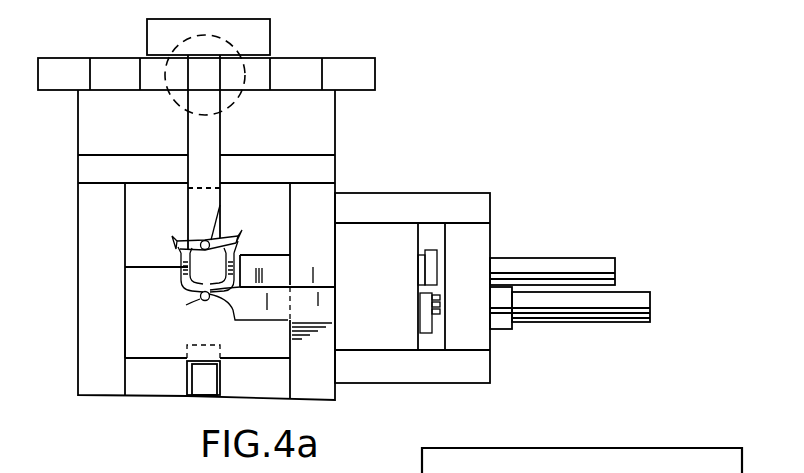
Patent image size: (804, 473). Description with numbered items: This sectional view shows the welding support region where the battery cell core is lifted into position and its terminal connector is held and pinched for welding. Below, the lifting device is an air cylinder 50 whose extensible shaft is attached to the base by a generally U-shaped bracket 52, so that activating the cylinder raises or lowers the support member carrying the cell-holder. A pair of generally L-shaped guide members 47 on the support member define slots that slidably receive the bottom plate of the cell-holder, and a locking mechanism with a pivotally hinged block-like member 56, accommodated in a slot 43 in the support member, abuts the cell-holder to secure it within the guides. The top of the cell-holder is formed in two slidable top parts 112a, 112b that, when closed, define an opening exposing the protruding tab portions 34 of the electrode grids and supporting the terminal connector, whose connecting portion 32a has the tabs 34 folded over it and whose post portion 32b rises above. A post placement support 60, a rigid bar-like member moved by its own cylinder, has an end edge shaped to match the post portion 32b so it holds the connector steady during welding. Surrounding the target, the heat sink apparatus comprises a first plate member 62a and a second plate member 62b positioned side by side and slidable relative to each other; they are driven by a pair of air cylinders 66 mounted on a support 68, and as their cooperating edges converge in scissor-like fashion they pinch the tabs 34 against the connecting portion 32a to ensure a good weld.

The air cylinder 50 is at (172, 50).
The U-shaped bracket 52 is at (342, 68).
The post placement support 60 is at (226, 168).
The support 68 is at (460, 192).
The top part 112a is at (172, 217).
The top part 112b is at (175, 341).
The connecting portion 32a is at (180, 281).
The post portion 32b is at (214, 230).
The tab portion 34 is at (174, 249).
The first plate member 62a is at (313, 283).
The second plate member 62b is at (300, 304).
The air cylinder 66 is at (437, 268).
The guide member 47 is at (98, 377).
The slot 43 is at (224, 350).
The block-like member 56 is at (214, 378).